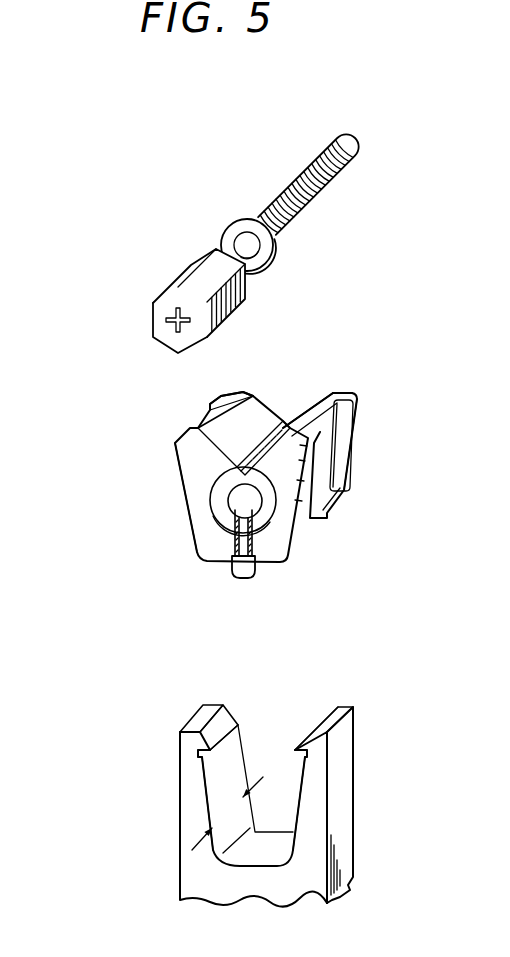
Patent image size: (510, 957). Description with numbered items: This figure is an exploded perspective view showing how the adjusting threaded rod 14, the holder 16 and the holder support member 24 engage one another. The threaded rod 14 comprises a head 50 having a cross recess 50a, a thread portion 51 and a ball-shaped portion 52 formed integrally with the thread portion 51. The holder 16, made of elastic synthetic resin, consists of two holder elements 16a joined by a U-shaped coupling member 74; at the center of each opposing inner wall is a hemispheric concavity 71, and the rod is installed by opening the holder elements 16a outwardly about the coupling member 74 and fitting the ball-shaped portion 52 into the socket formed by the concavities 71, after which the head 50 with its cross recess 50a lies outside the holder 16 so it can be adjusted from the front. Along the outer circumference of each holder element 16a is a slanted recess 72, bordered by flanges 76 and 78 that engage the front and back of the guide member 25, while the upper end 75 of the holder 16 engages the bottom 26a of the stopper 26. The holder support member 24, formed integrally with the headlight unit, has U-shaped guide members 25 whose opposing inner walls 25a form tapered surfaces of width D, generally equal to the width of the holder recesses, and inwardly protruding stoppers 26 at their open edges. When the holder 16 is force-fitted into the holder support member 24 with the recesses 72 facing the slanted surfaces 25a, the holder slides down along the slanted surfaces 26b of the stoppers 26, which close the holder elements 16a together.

The threaded rod 14 is at (223, 234).
The thread portion 51 is at (302, 168).
The ball-shaped portion 52 is at (277, 248).
The head 50 is at (166, 301).
The cross recess 50a is at (139, 322).
The holder 16 is at (264, 484).
The holder element 16a is at (190, 472).
The hemispheric concavity 71 is at (212, 510).
The slanted recess 72 is at (330, 424).
The coupling member 74 is at (234, 570).
The upper end 75 is at (210, 417).
The flange 76 is at (176, 446).
The flange 78 is at (218, 394).
The holder support member 24 is at (256, 786).
The guide member 25 is at (192, 822).
The inner wall 25a is at (238, 783).
The stopper 26 is at (344, 707).
The bottom of stopper 26a is at (200, 756).
The slanted surface 26b is at (236, 708).
The width of slanted surface D is at (227, 815).